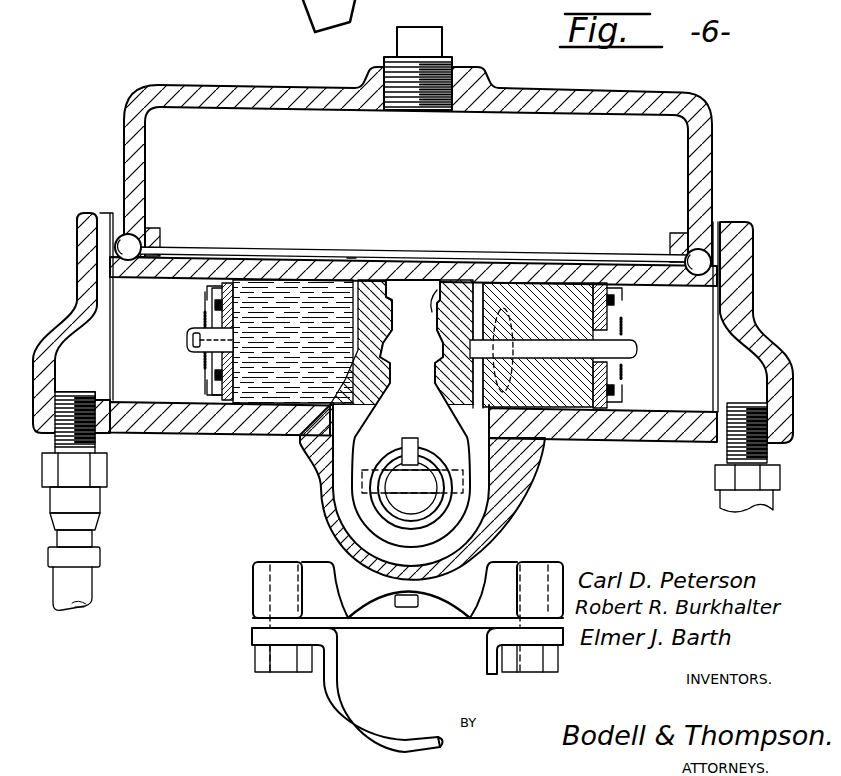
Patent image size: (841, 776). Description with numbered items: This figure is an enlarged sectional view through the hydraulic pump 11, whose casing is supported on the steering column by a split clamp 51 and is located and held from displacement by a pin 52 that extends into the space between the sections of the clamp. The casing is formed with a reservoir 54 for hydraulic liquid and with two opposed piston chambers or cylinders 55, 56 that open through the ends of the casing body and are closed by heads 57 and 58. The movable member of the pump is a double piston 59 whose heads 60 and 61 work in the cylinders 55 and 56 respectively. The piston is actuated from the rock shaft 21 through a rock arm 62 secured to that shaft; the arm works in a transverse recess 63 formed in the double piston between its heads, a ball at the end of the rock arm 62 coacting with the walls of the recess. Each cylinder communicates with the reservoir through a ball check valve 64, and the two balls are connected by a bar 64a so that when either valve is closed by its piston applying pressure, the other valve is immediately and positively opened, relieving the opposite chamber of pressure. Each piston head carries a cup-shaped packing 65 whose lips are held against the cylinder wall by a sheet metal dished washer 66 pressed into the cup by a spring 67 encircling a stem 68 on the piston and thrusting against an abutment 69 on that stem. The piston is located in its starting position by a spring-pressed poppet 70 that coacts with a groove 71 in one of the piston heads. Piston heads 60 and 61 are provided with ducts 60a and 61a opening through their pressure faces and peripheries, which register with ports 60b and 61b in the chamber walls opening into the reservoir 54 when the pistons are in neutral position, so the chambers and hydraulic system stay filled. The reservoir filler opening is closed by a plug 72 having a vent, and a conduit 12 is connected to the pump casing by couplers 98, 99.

The pump 11 is at (158, 85).
The conduit 12 is at (73, 587).
The rock shaft 21 is at (323, 458).
The split clamp 51 is at (252, 638).
The pin 52 is at (398, 607).
The reservoir 54 is at (496, 165).
The piston chamber 55 is at (200, 253).
The piston chamber 56 is at (657, 290).
The head 57 is at (78, 255).
The head 58 is at (752, 259).
The double piston 59 is at (405, 275).
The piston head 60 is at (280, 367).
The duct 60a is at (263, 433).
The port 60b is at (334, 272).
The piston head 61 is at (578, 392).
The duct 61a is at (553, 330).
The port 61b is at (477, 310).
The rock arm 62 is at (403, 412).
The transverse recess 63 is at (432, 288).
The ball check valve 64 is at (150, 238).
The bar 64a is at (350, 255).
The cup-shaped packing 65 is at (283, 258).
The dished washer 66 is at (200, 293).
The spring 67 is at (215, 362).
The stem 68 is at (190, 340).
The abutment 69 is at (203, 320).
The spring-pressed poppet 70 is at (553, 425).
The groove 71 is at (514, 396).
The plug 72 is at (472, 67).
The coupler 98 is at (82, 502).
The coupler 99 is at (720, 485).